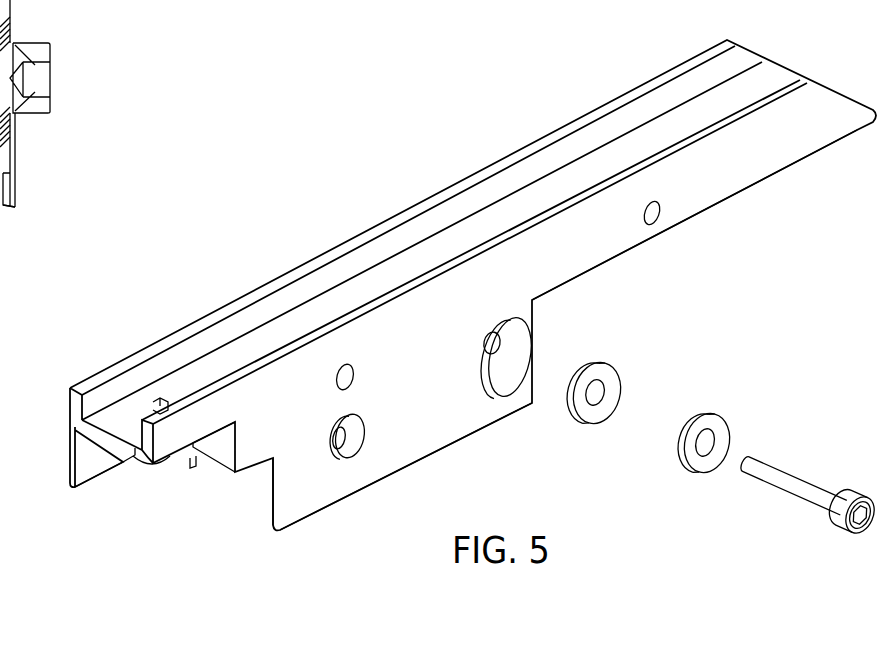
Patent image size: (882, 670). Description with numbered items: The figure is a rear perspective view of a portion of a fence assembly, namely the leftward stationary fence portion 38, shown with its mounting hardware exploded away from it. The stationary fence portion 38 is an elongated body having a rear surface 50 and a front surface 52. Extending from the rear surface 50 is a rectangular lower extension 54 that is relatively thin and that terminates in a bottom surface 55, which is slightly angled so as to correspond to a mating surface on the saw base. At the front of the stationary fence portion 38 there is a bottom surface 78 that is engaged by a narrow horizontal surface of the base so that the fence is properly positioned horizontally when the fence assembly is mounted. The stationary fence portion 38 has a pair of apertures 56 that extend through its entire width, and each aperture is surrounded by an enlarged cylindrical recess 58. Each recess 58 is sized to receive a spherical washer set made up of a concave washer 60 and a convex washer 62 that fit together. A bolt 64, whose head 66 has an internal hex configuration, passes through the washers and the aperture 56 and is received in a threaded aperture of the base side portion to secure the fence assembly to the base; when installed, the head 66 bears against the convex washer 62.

The stationary fence portion 38 is at (372, 227).
The rear surface 50 is at (562, 253).
The front surface 52 is at (68, 452).
The rectangular lower extension 54 is at (430, 412).
The bottom surface 55 is at (7, 207).
The apertures 56 is at (492, 335).
The enlarged cylindrical recess 58 is at (508, 370).
The concave washer 60 is at (613, 383).
The convex washer 62 is at (717, 430).
The bolt 64 is at (777, 493).
The head 66 is at (840, 530).
The bottom surface 78 is at (100, 473).